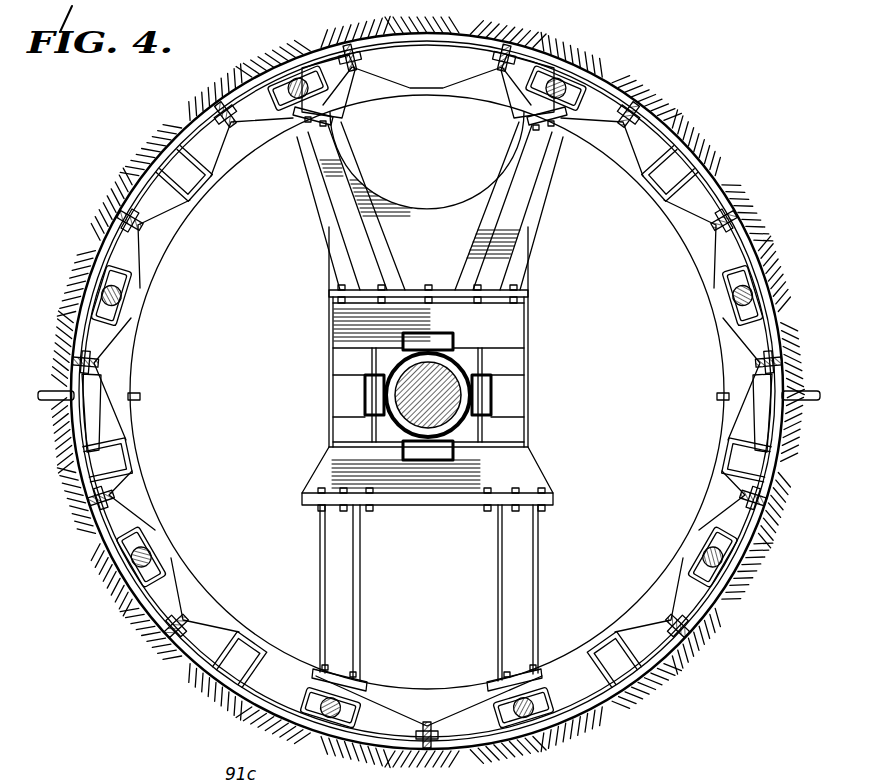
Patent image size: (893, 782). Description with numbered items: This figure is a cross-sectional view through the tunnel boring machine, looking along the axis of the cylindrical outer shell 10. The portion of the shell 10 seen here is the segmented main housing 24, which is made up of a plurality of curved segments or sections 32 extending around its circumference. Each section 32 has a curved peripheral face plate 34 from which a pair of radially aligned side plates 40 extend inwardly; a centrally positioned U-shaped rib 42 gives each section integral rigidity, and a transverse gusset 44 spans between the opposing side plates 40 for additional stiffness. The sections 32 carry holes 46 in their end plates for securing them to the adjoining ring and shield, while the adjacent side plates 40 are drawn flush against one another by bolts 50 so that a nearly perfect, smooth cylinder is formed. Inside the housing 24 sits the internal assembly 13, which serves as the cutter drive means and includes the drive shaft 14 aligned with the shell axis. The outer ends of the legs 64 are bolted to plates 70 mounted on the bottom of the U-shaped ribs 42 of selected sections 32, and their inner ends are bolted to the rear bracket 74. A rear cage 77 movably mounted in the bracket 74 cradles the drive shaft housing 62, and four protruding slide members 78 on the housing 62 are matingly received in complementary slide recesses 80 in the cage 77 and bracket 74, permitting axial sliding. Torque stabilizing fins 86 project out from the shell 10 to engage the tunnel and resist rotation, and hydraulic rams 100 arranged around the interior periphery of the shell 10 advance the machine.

The cylindrical outer shell 10 is at (133, 182).
The internal assembly 13 is at (477, 338).
The drive shaft 14 is at (445, 402).
The main housing 24 is at (667, 127).
The segment or section 32 is at (718, 187).
The peripheral face plate 34 is at (330, 52).
The side plate 40 is at (143, 225).
The U-shaped rib 42 is at (303, 92).
The transverse gusset 44 is at (517, 80).
The holes 46 is at (233, 110).
The bolts 50 is at (92, 375).
The drive shaft housing 62 is at (463, 363).
The forward legs 64 is at (337, 210).
The plates 70 is at (340, 113).
The rear bracket 74 is at (330, 325).
The rear cage 77 is at (342, 365).
The slide members 78 is at (367, 387).
The slide recesses 80 is at (372, 403).
The torque stabilizing fins 86 is at (42, 390).
The rams 100 is at (588, 57).